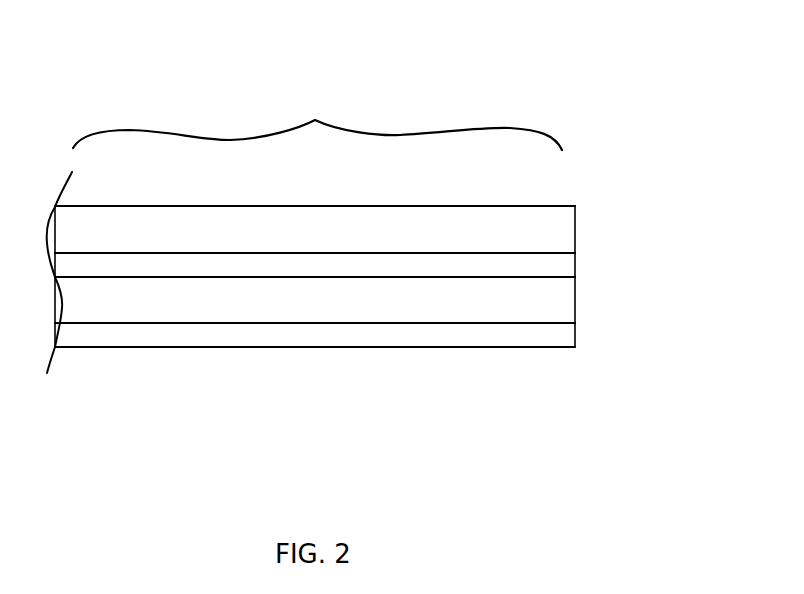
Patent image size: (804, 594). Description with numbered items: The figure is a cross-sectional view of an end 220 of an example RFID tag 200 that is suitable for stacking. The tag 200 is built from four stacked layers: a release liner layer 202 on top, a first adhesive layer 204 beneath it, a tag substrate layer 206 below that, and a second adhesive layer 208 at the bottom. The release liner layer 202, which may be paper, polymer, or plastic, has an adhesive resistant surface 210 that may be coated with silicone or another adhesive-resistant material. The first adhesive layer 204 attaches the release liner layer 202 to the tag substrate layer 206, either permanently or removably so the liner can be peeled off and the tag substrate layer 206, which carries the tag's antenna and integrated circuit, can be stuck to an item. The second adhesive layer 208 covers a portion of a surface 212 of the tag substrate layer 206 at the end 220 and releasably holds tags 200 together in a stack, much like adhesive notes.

The RFID tag 200 is at (572, 87).
The release liner layer 202 is at (561, 229).
The first adhesive layer 204 is at (561, 267).
The tag substrate layer 206 is at (561, 304).
The second adhesive layer 208 is at (560, 337).
The adhesive resistant surface 210 is at (323, 206).
The surface of tag substrate layer 212 is at (402, 323).
The end 220 is at (317, 115).